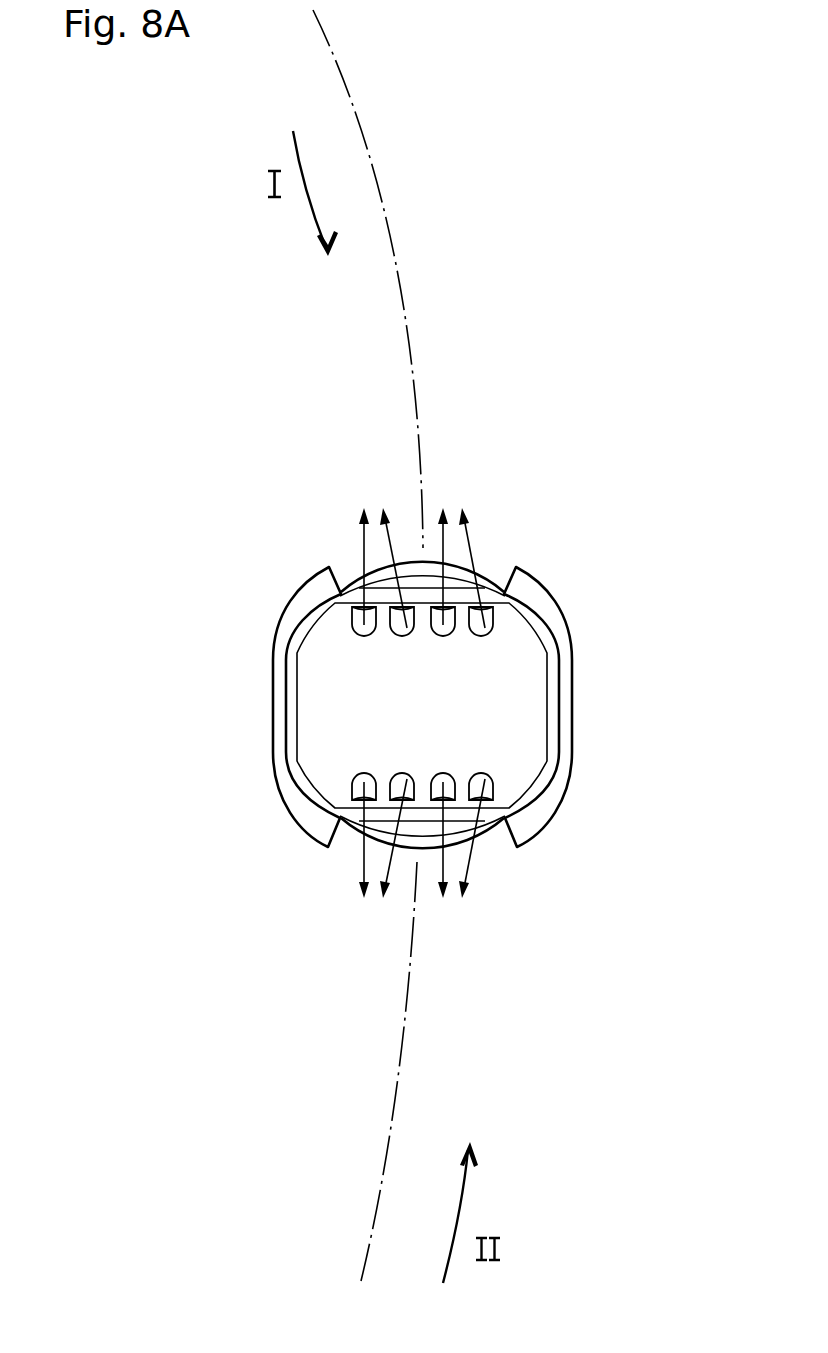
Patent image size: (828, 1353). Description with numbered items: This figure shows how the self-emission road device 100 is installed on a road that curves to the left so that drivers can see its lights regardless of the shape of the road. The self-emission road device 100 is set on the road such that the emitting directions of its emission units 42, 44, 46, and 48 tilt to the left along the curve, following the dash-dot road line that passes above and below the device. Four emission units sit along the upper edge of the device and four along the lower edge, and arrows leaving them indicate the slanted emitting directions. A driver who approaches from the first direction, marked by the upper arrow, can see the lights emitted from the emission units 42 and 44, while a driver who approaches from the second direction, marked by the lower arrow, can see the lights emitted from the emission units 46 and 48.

The self-emission road device 100 is at (590, 621).
The emission unit 42 is at (407, 632).
The emission unit 44 is at (486, 632).
The emission unit 46 is at (404, 778).
The emission unit 48 is at (483, 778).